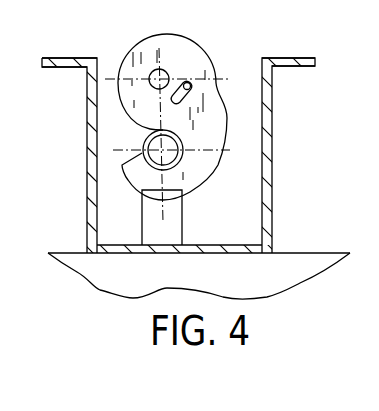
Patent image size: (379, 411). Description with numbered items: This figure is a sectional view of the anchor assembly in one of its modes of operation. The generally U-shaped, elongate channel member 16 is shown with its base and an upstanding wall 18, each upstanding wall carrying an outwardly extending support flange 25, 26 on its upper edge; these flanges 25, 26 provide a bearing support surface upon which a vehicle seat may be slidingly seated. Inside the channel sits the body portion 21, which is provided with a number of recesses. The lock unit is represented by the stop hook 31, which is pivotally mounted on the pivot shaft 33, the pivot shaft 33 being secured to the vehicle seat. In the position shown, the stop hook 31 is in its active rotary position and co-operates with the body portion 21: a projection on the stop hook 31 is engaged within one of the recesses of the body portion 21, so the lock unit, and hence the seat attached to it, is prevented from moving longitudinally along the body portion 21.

The elongate channel member 16 is at (87, 162).
The upstanding wall 18 is at (272, 162).
The body portion 21 is at (183, 153).
The support flange 25 is at (70, 57).
The support flange 26 is at (293, 58).
The stop hook 31 is at (183, 55).
The pivot shaft 33 is at (152, 71).